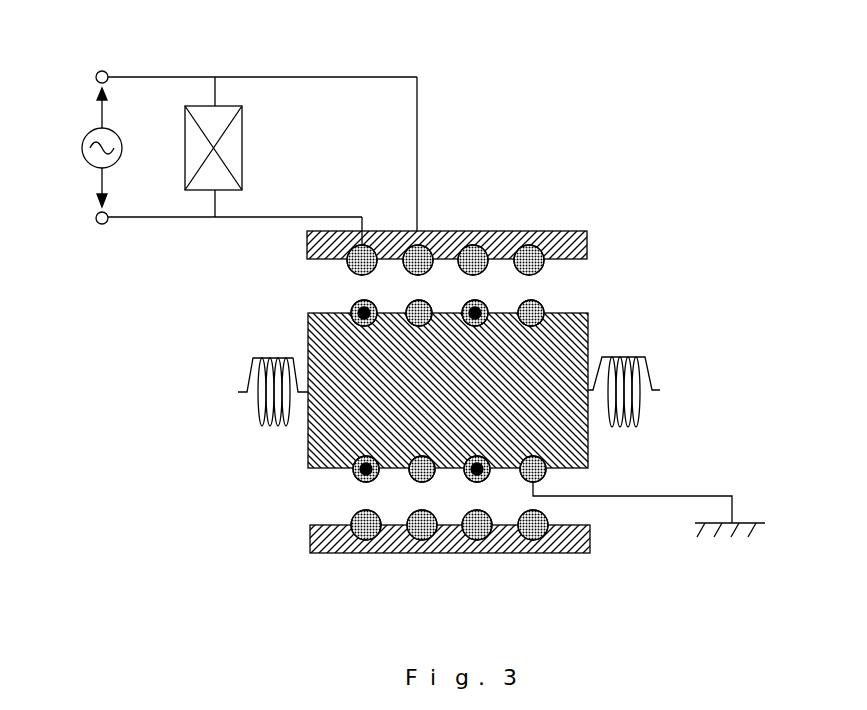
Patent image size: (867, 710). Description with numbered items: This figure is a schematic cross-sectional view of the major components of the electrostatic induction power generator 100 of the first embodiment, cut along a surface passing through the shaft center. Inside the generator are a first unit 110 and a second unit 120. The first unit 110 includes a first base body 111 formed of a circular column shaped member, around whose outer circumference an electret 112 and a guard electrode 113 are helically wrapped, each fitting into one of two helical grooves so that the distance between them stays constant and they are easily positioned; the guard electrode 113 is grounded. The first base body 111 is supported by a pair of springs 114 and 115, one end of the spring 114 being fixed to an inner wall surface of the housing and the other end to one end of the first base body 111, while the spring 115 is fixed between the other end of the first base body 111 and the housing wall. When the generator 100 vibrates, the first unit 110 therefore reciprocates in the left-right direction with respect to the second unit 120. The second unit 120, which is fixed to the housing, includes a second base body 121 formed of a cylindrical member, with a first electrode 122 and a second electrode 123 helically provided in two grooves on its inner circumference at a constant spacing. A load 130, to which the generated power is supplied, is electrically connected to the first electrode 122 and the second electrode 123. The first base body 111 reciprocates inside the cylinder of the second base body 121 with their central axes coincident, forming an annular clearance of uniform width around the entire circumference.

The electrostatic induction power generator 100 is at (578, 131).
The first unit 110 is at (643, 320).
The first base body 111 is at (588, 448).
The electret 112 is at (354, 478).
The guard electrode 113 is at (413, 476).
The spring 114 is at (250, 371).
The spring 115 is at (657, 373).
The second unit 120 is at (604, 229).
The second base body 121 is at (500, 231).
The first electrode 122 is at (349, 265).
The second electrode 123 is at (445, 231).
The load 130 is at (235, 139).